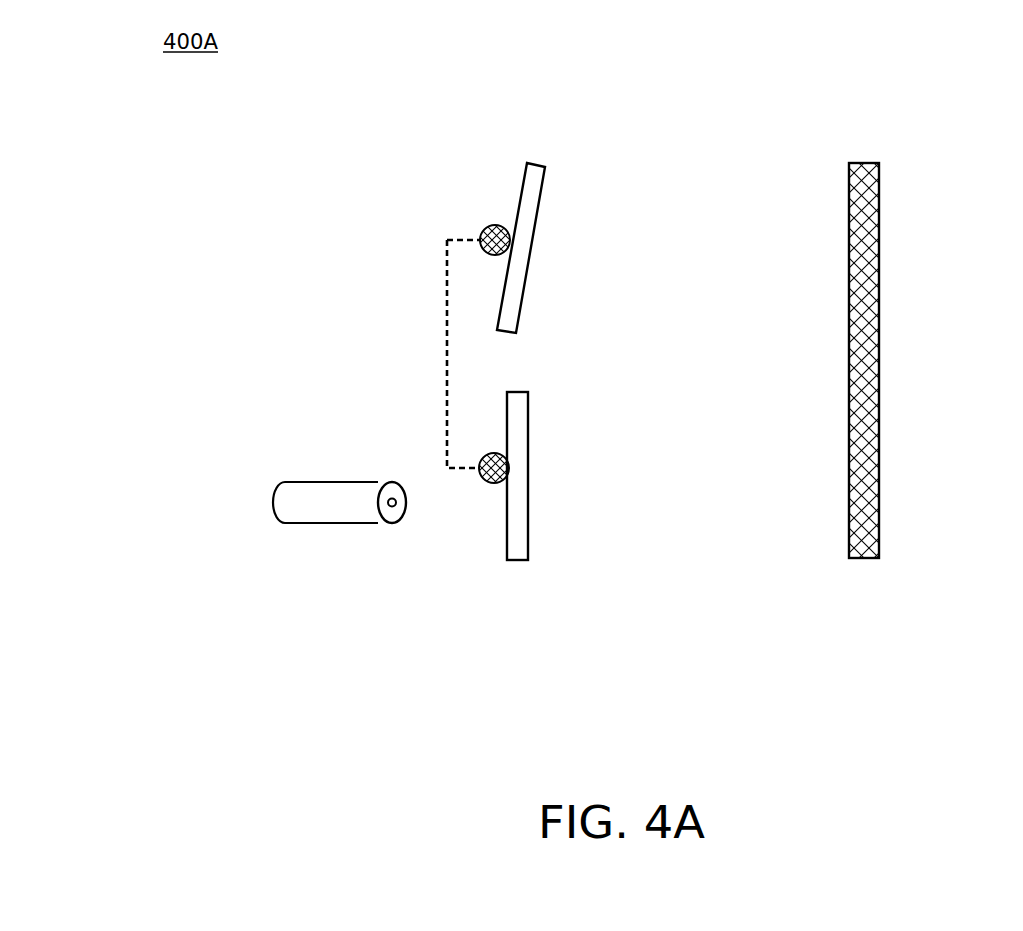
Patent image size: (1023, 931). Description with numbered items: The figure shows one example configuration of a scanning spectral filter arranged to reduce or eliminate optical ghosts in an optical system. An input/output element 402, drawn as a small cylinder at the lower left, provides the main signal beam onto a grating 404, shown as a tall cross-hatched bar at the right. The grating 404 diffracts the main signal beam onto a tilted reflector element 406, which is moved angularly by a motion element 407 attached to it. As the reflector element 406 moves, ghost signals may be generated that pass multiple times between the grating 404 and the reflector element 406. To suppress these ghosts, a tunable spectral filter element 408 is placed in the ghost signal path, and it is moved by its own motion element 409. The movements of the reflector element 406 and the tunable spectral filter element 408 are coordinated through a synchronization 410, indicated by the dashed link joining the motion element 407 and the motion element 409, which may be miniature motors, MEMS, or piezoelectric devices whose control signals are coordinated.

The input/output element 402 is at (312, 482).
The grating 404 is at (880, 170).
The reflector element 406 is at (545, 173).
The motion element 407 is at (487, 223).
The tunable spectral filter element 408 is at (530, 412).
The motion element 409 is at (485, 455).
The synchronization 410 is at (441, 298).